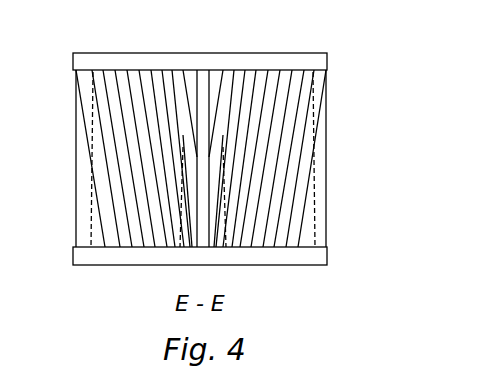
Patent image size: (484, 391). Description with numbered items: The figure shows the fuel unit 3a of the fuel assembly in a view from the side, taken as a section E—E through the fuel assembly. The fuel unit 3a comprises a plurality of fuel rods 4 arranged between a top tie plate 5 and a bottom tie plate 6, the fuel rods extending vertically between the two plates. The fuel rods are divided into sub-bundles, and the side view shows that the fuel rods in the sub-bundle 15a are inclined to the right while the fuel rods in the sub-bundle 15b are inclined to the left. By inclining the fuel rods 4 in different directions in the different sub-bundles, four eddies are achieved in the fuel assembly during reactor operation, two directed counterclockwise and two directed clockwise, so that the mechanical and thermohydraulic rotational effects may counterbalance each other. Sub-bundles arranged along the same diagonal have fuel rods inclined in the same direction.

The fuel unit 3a is at (327, 164).
The fuel rods 4 is at (102, 185).
The top tie plate 5 is at (307, 62).
The bottom tie plate 6 is at (277, 258).
The sub-bundle 15a is at (125, 78).
The sub-bundle 15b is at (253, 84).